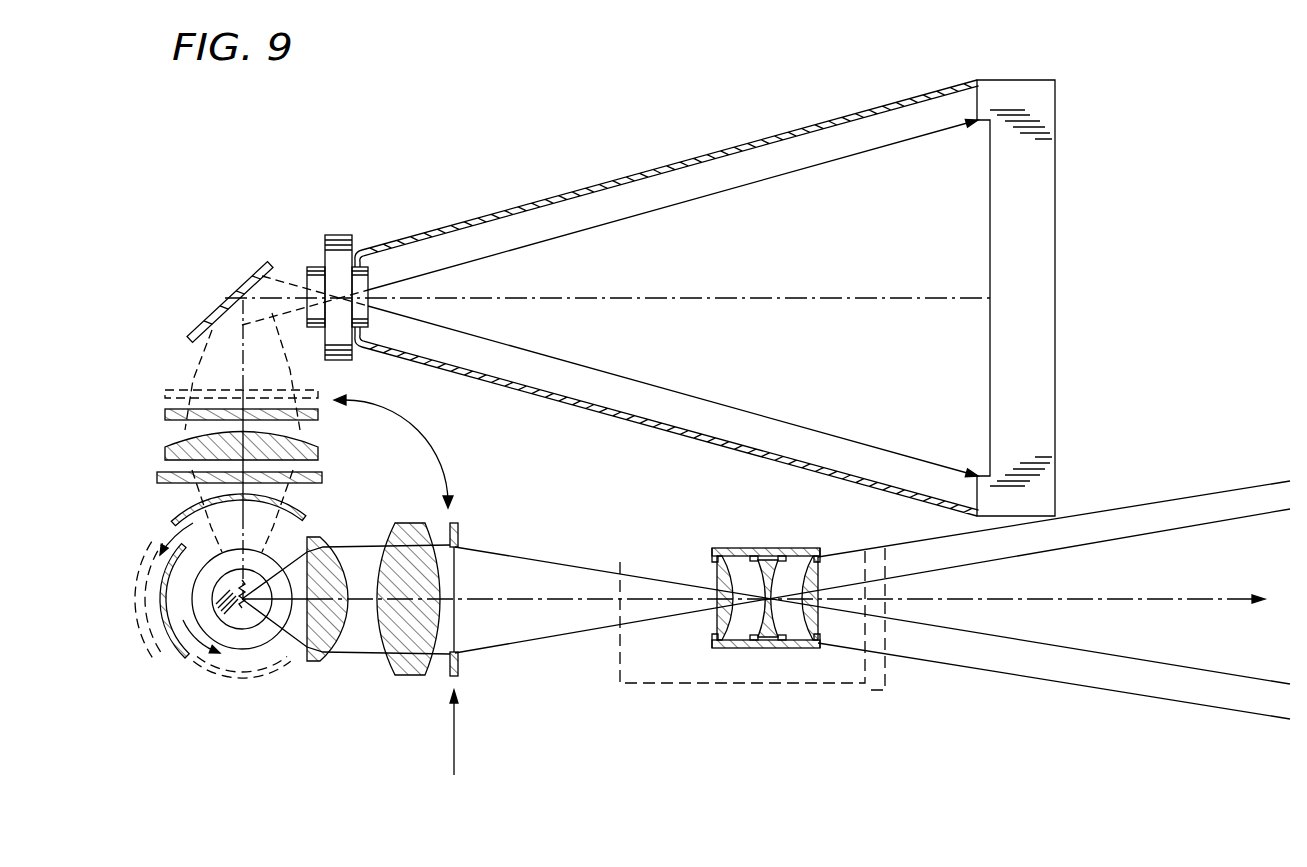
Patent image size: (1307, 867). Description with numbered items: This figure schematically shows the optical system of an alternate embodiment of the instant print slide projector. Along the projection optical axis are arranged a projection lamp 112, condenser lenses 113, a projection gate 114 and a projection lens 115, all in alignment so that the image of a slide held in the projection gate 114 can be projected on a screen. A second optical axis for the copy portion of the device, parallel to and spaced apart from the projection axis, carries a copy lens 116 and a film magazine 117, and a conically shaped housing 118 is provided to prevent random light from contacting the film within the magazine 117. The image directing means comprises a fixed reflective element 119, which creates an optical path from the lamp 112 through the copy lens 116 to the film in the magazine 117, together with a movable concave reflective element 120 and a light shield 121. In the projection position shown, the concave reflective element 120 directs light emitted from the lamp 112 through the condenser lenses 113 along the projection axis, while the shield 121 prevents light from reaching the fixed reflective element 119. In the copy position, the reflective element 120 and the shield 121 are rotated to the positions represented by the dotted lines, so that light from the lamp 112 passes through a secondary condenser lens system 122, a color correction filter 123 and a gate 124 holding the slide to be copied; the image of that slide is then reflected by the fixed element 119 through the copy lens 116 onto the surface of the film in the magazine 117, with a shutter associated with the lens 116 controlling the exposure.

The projection lamp 112 is at (242, 637).
The condenser lenses 113 is at (323, 653).
The projection gate 114 is at (459, 668).
The projection lens 115 is at (770, 650).
The copy lens 116 is at (338, 238).
The film magazine 117 is at (1048, 228).
The conically shaped housing 118 is at (567, 191).
The fixed reflective element 119 is at (223, 304).
The movable concave reflective element 120 is at (190, 652).
The light shield 121 is at (173, 521).
The secondary condenser lens system 122 is at (156, 475).
The color correction filter 123 is at (163, 413).
The gate 124 is at (167, 391).